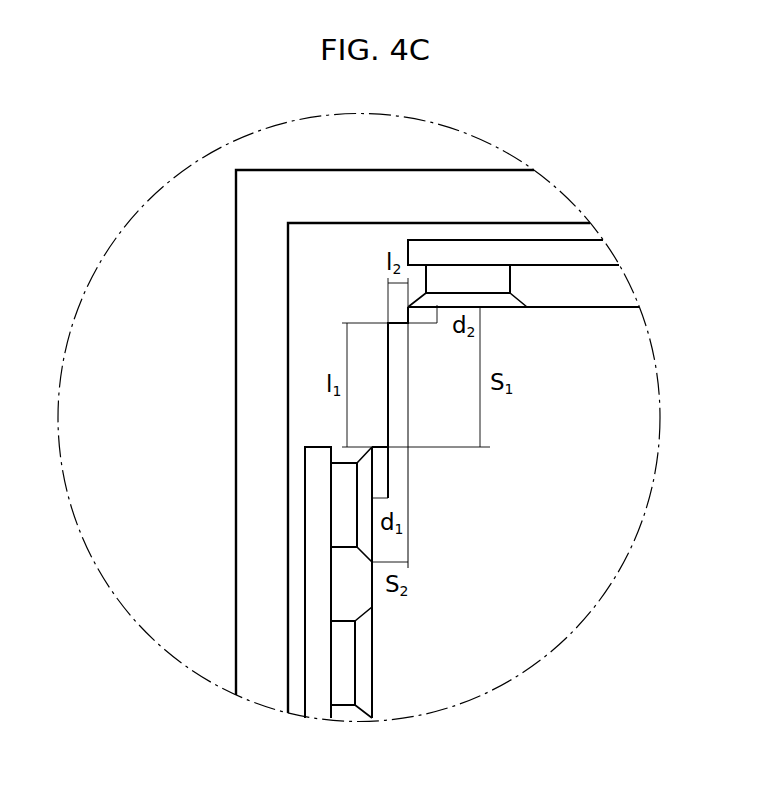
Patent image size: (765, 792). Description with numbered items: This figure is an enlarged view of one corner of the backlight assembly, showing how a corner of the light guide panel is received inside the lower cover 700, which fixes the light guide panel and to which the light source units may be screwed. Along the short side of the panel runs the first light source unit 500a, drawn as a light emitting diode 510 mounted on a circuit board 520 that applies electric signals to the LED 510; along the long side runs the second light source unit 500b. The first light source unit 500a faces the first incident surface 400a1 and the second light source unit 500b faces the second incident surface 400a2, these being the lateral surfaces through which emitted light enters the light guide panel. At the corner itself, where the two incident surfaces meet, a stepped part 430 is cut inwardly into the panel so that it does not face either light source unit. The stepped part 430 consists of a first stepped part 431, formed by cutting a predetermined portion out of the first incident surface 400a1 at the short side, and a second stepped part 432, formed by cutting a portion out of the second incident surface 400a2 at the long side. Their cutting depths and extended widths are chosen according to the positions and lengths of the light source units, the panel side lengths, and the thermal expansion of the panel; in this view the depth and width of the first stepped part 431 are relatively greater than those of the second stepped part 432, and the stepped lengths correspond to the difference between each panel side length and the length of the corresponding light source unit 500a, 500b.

The lower cover 700 is at (254, 237).
The first light source unit 500a is at (223, 582).
The second light source unit 500b is at (575, 250).
The light emitting diode 510 is at (343, 483).
The circuit board 520 is at (312, 541).
The stepped part 430 is at (388, 350).
The first stepped part 431 is at (388, 433).
The second stepped part 432 is at (398, 322).
The first incident surface 400a1 is at (372, 660).
The second incident surface 400a2 is at (583, 308).